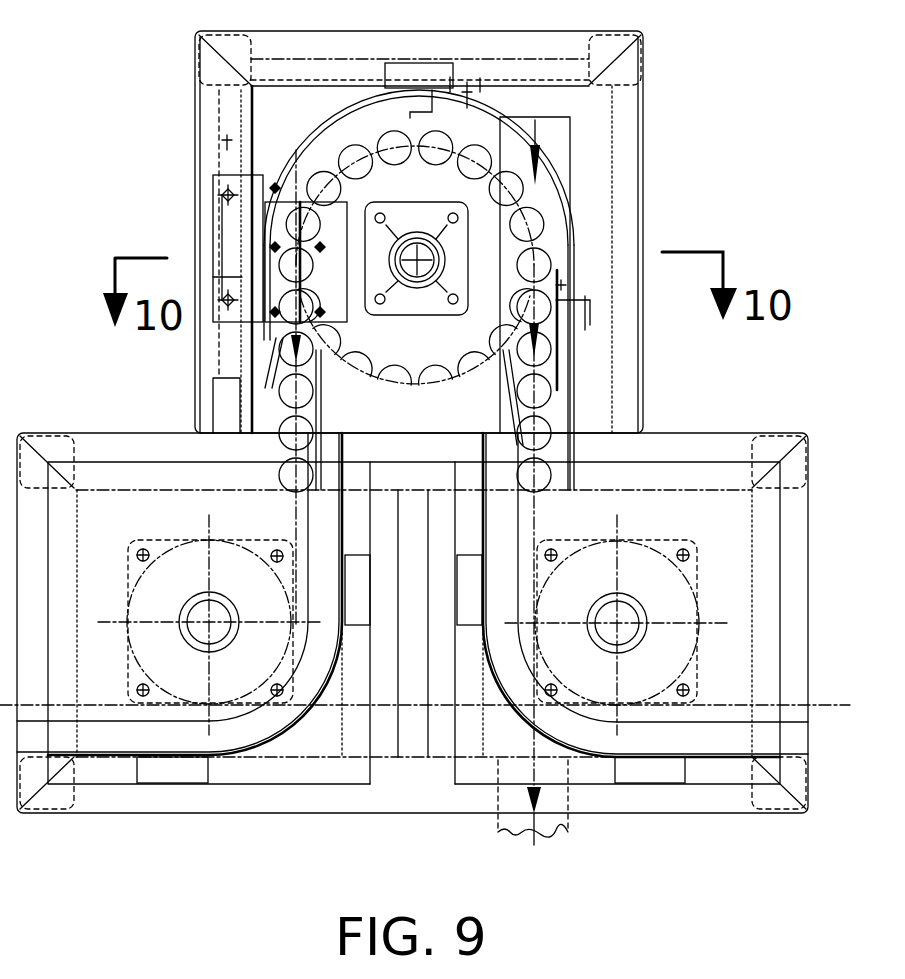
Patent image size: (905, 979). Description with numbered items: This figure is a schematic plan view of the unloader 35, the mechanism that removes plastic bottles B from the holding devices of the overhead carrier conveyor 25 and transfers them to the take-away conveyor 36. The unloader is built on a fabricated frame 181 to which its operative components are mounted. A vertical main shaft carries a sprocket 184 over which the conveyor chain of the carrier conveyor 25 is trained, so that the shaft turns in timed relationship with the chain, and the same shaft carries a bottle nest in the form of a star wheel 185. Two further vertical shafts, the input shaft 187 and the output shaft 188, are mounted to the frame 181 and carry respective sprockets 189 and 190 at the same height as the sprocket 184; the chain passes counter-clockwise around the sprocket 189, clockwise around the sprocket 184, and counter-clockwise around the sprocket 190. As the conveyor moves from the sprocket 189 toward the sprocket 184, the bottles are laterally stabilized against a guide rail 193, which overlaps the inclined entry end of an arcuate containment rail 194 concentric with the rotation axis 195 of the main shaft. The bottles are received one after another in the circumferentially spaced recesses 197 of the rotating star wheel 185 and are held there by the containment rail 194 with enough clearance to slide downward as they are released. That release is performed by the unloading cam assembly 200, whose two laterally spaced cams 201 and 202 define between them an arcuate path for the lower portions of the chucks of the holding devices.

The unloader 35 is at (136, 89).
The unloading cam assembly 200 is at (205, 223).
The arcuate containment rail 194 is at (355, 130).
The cam 201 is at (290, 175).
The sprocket 184 is at (488, 370).
The rotation axis 195 is at (425, 233).
The star wheel 185 is at (415, 379).
The plastic bottles B is at (278, 478).
The recesses 197 is at (435, 383).
The cam 202 is at (322, 280).
The guide rail 193 is at (319, 408).
The frame 181 is at (106, 428).
The carrier conveyor 25 is at (106, 732).
The take-away conveyor 36 is at (568, 830).
The sprocket 189 is at (128, 612).
The input shaft 187 is at (190, 610).
The sprocket 190 is at (630, 540).
The output shaft 188 is at (635, 612).